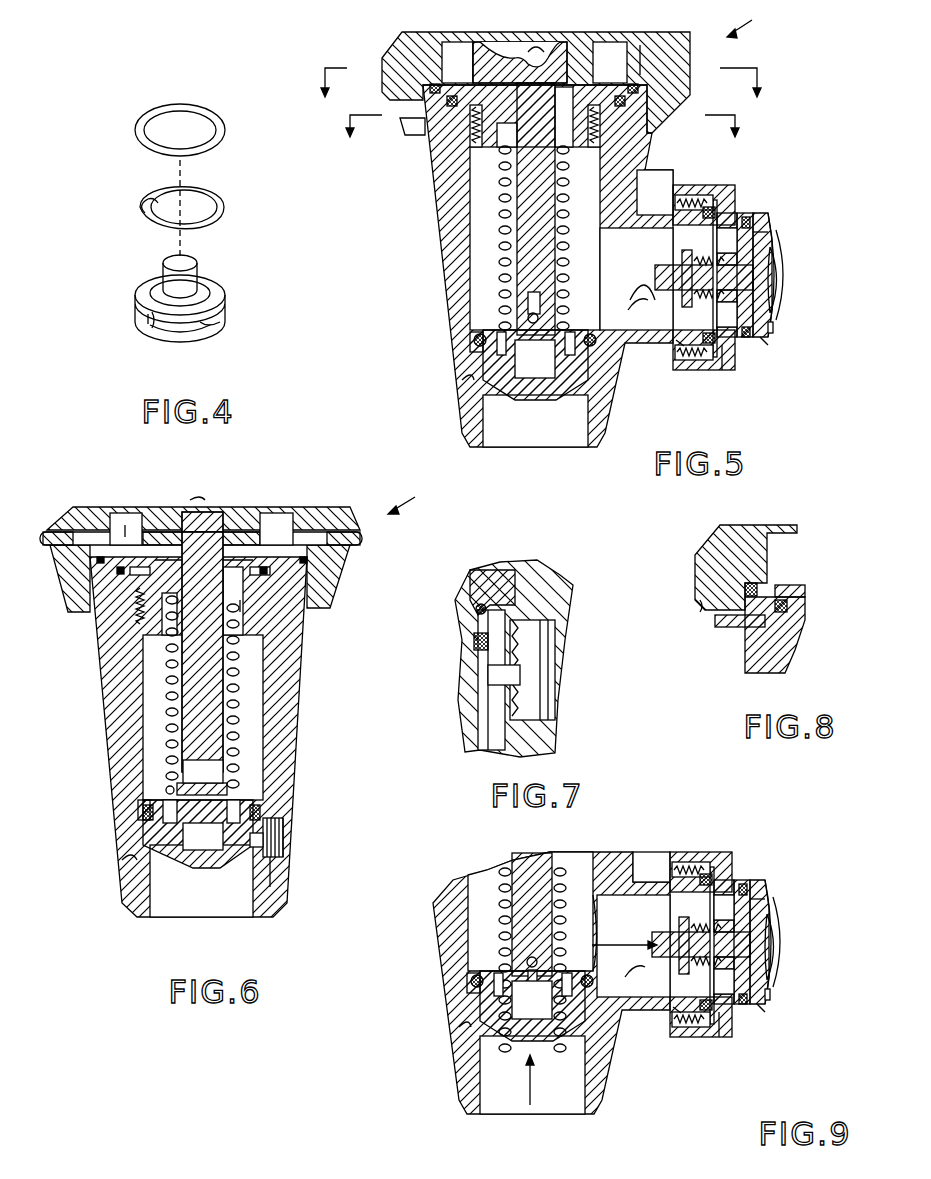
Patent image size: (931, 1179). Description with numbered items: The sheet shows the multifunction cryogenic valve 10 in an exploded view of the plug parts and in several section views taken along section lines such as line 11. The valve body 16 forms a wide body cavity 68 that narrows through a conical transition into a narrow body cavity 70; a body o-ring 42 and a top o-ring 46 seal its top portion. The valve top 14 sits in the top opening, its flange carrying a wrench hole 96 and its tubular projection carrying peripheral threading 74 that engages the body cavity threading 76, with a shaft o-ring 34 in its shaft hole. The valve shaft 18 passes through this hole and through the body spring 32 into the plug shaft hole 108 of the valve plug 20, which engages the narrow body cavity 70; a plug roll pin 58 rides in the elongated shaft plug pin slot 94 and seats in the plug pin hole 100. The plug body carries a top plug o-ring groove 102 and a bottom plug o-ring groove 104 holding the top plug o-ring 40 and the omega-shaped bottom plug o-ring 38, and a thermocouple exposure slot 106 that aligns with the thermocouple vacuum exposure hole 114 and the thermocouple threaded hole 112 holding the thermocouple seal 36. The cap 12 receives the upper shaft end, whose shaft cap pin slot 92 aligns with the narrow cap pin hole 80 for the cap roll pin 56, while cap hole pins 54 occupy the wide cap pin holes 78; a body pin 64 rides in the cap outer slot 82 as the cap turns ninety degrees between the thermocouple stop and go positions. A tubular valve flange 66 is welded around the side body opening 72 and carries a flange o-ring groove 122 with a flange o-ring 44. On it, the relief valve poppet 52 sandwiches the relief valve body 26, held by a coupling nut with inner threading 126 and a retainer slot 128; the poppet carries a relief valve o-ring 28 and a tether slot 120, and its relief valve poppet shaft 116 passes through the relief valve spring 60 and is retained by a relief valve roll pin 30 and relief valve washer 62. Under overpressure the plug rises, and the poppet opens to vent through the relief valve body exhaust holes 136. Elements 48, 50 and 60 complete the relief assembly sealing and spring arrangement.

In FIG. 5, the multifunction cryogenic valve 10 is at (548, 66).
In FIG. 6, the multifunction cryogenic valve 10 is at (414, 498).
In FIG. 5, the section line 11 is at (542, 138).
In FIG. 5, the cap 12 is at (672, 40).
In FIG. 6, the cap 12 is at (305, 513).
In FIG. 8, the cap 12 is at (712, 543).
In FIG. 5, the valve top 14 is at (590, 125).
In FIG. 6, the valve top 14 is at (262, 612).
In FIG. 8, the valve top 14 is at (800, 588).
In FIG. 5, the valve body 16 is at (440, 243).
In FIG. 6, the valve body 16 is at (300, 665).
In FIG. 7, the valve body 16 is at (545, 573).
In FIG. 8, the valve body 16 is at (785, 638).
In FIG. 9, the valve body 16 is at (615, 856).
In FIG. 5, the valve shaft 18 is at (642, 200).
In FIG. 6, the valve shaft 18 is at (205, 520).
In FIG. 9, the valve shaft 18 is at (651, 867).
In FIG. 4, the valve plug 20 is at (205, 285).
In FIG. 5, the valve plug 20 is at (548, 392).
In FIG. 6, the valve plug 20 is at (205, 862).
In FIG. 7, the valve plug 20 is at (478, 572).
In FIG. 9, the valve plug 20 is at (545, 1035).
In FIG. 5, the relief valve body 26 is at (752, 324).
In FIG. 9, the relief valve body 26 is at (749, 991).
In FIG. 5, the relief valve o-ring 28 is at (750, 222).
In FIG. 9, the relief valve o-ring 28 is at (747, 889).
In FIG. 5, the relief valve roll pin 30 is at (680, 265).
In FIG. 9, the relief valve roll pin 30 is at (680, 932).
In FIG. 5, the body spring 32 is at (520, 198).
In FIG. 6, the body spring 32 is at (165, 666).
In FIG. 9, the body spring 32 is at (505, 876).
In FIG. 5, the shaft o-ring 34 is at (462, 45).
In FIG. 6, the shaft o-ring 34 is at (250, 603).
In FIG. 6, the thermocouple seal 36 is at (275, 850).
In FIG. 7, the thermocouple seal 36 is at (520, 698).
In FIG. 4, the bottom plug o-ring 38 is at (160, 190).
In FIG. 5, the bottom plug o-ring 38 is at (594, 346).
In FIG. 6, the bottom plug o-ring 38 is at (262, 812).
In FIG. 7, the bottom plug o-ring 38 is at (474, 639).
In FIG. 9, the bottom plug o-ring 38 is at (591, 988).
In FIG. 4, the top plug o-ring 40 is at (165, 110).
In FIG. 5, the top plug o-ring 40 is at (575, 345).
In FIG. 6, the top plug o-ring 40 is at (240, 804).
In FIG. 7, the top plug o-ring 40 is at (476, 604).
In FIG. 9, the top plug o-ring 40 is at (572, 990).
In FIG. 5, the body o-ring 42 is at (430, 84).
In FIG. 6, the body o-ring 42 is at (118, 572).
In FIG. 8, the body o-ring 42 is at (758, 584).
In FIG. 5, the flange o-ring 44 is at (728, 362).
In FIG. 9, the flange o-ring 44 is at (725, 1030).
In FIG. 5, the top o-ring 46 is at (450, 94).
In FIG. 6, the top o-ring 46 is at (97, 563).
In FIG. 8, the top o-ring 46 is at (788, 607).
In FIG. 5, the cap wall 48 is at (783, 290).
In FIG. 9, the cap wall 48 is at (781, 962).
In FIG. 5, the seal 50 is at (774, 326).
In FIG. 9, the seal 50 is at (771, 994).
In FIG. 5, the relief valve poppet 52 is at (770, 244).
In FIG. 9, the relief valve poppet 52 is at (768, 912).
In FIG. 6, the cap hole pins 54 is at (43, 534).
In FIG. 5, the cap roll pin 56 is at (540, 48).
In FIG. 6, the cap roll pin 56 is at (125, 523).
In FIG. 5, the plug roll pin 58 is at (528, 318).
In FIG. 6, the plug roll pin 58 is at (166, 790).
In FIG. 9, the plug roll pin 58 is at (527, 962).
In FIG. 5, the relief valve spring 60 is at (770, 262).
In FIG. 9, the relief valve spring 60 is at (767, 930).
In FIG. 5, the relief valve washer 62 is at (700, 300).
In FIG. 9, the relief valve washer 62 is at (700, 967).
In FIG. 8, the body pin 64 is at (715, 621).
In FIG. 5, the valve flange 66 is at (620, 262).
In FIG. 9, the valve flange 66 is at (620, 928).
In FIG. 5, the wide body cavity 68 is at (462, 230).
In FIG. 6, the wide body cavity 68 is at (142, 697).
In FIG. 9, the wide body cavity 68 is at (530, 911).
In FIG. 5, the narrow body cavity 70 is at (575, 432).
In FIG. 6, the narrow body cavity 70 is at (245, 912).
In FIG. 9, the narrow body cavity 70 is at (572, 1099).
In FIG. 5, the side body opening 72 is at (640, 288).
In FIG. 9, the side body opening 72 is at (637, 952).
In FIG. 5, the peripheral threading 74 is at (470, 125).
In FIG. 6, the peripheral threading 74 is at (150, 608).
In FIG. 5, the body cavity threading 76 is at (622, 120).
In FIG. 6, the body cavity threading 76 is at (268, 598).
In FIG. 6, the wide cap pin holes 78 is at (178, 512).
In FIG. 6, the narrow cap pin hole 80 is at (265, 523).
In FIG. 5, the cap outer slot 82 is at (405, 105).
In FIG. 8, the cap outer slot 82 is at (700, 603).
In FIG. 5, the shaft cap pin slot 92 is at (500, 43).
In FIG. 5, the shaft plug pin slot 94 is at (528, 300).
In FIG. 6, the shaft plug pin slot 94 is at (228, 789).
In FIG. 9, the shaft plug pin slot 94 is at (526, 975).
In FIG. 5, the wrench hole 96 is at (640, 48).
In FIG. 6, the wrench hole 96 is at (140, 528).
In FIG. 4, the plug pin hole 100 is at (152, 299).
In FIG. 4, the top plug o-ring groove 102 is at (214, 323).
In FIG. 5, the top plug o-ring groove 102 is at (470, 340).
In FIG. 6, the top plug o-ring groove 102 is at (140, 805).
In FIG. 9, the top plug o-ring groove 102 is at (467, 982).
In FIG. 4, the bottom plug o-ring groove 104 is at (195, 336).
In FIG. 5, the bottom plug o-ring groove 104 is at (465, 382).
In FIG. 6, the bottom plug o-ring groove 104 is at (130, 859).
In FIG. 9, the bottom plug o-ring groove 104 is at (465, 1027).
In FIG. 4, the thermocouple exposure slot 106 is at (155, 326).
In FIG. 6, the thermocouple exposure slot 106 is at (272, 880).
In FIG. 7, the thermocouple exposure slot 106 is at (480, 738).
In FIG. 4, the plug shaft hole 108 is at (172, 268).
In FIG. 5, the plug shaft hole 108 is at (530, 400).
In FIG. 6, the plug shaft hole 108 is at (190, 860).
In FIG. 9, the plug shaft hole 108 is at (512, 1040).
In FIG. 6, the thermocouple threaded hole 112 is at (283, 832).
In FIG. 7, the thermocouple threaded hole 112 is at (548, 638).
In FIG. 6, the thermocouple vacuum exposure hole 114 is at (262, 845).
In FIG. 7, the thermocouple vacuum exposure hole 114 is at (488, 674).
In FIG. 5, the relief valve poppet shaft 116 is at (660, 278).
In FIG. 9, the relief valve poppet shaft 116 is at (660, 945).
In FIG. 5, the tether slot 120 is at (778, 278).
In FIG. 9, the tether slot 120 is at (776, 945).
In FIG. 5, the flange o-ring groove 122 is at (706, 188).
In FIG. 9, the flange o-ring groove 122 is at (703, 857).
In FIG. 5, the inner threading 126 is at (700, 370).
In FIG. 9, the inner threading 126 is at (700, 1037).
In FIG. 5, the retainer slot 128 is at (716, 212).
In FIG. 9, the retainer slot 128 is at (713, 879).
In FIG. 5, the relief valve body exhaust holes 136 is at (768, 338).
In FIG. 9, the relief valve body exhaust holes 136 is at (765, 1005).